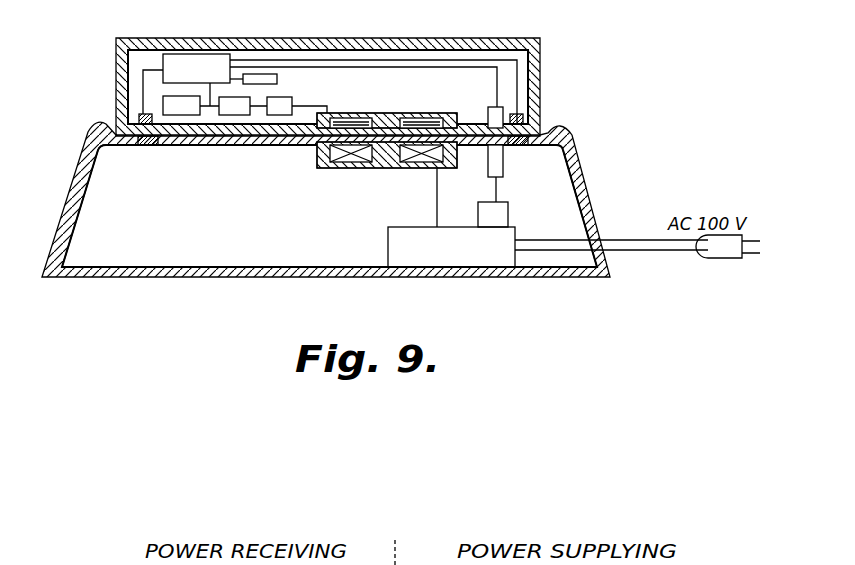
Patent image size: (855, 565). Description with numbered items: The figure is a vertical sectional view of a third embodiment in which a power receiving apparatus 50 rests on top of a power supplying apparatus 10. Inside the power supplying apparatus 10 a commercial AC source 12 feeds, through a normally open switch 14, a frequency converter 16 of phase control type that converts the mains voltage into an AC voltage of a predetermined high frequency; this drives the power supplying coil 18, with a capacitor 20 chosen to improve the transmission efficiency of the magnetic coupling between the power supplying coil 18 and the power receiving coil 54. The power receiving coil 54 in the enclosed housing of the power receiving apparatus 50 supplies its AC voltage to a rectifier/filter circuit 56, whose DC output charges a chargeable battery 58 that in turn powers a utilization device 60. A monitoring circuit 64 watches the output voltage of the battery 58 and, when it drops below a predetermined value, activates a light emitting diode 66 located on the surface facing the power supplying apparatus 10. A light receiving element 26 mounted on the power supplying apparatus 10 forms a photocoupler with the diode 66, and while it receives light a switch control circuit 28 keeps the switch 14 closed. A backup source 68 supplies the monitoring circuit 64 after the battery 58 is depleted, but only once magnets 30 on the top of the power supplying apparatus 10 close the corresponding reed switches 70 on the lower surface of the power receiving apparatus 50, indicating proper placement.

The power supplying apparatus 10 is at (588, 196).
The commercial AC source 12 is at (196, 62).
The normally open switch 14 is at (399, 246).
The frequency converter 16 is at (399, 246).
The power supplying coil 18 is at (344, 169).
The capacitor 20 is at (388, 243).
The light receiving element 26 is at (488, 167).
The switch control circuit 28 is at (508, 215).
The magnets 30 is at (146, 147).
The power receiving apparatus 50 is at (546, 58).
The power receiving coil 54 is at (371, 114).
The rectifier/filter circuit 56 is at (282, 116).
The chargeable battery 58 is at (242, 116).
The utilization device 60 is at (187, 116).
The monitoring circuit 64 is at (221, 41).
The light emitting diode 66 is at (487, 116).
The backup source 68 is at (277, 80).
The reed switches 70 is at (139, 119).